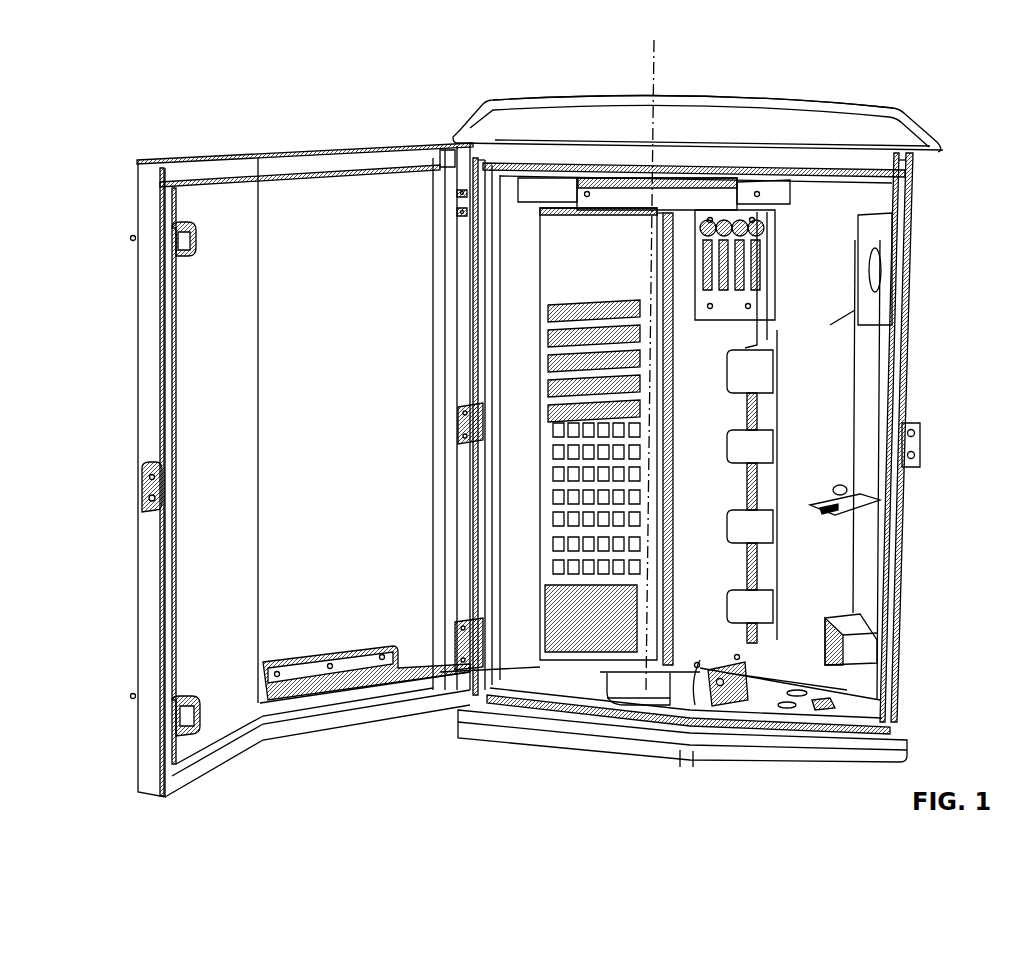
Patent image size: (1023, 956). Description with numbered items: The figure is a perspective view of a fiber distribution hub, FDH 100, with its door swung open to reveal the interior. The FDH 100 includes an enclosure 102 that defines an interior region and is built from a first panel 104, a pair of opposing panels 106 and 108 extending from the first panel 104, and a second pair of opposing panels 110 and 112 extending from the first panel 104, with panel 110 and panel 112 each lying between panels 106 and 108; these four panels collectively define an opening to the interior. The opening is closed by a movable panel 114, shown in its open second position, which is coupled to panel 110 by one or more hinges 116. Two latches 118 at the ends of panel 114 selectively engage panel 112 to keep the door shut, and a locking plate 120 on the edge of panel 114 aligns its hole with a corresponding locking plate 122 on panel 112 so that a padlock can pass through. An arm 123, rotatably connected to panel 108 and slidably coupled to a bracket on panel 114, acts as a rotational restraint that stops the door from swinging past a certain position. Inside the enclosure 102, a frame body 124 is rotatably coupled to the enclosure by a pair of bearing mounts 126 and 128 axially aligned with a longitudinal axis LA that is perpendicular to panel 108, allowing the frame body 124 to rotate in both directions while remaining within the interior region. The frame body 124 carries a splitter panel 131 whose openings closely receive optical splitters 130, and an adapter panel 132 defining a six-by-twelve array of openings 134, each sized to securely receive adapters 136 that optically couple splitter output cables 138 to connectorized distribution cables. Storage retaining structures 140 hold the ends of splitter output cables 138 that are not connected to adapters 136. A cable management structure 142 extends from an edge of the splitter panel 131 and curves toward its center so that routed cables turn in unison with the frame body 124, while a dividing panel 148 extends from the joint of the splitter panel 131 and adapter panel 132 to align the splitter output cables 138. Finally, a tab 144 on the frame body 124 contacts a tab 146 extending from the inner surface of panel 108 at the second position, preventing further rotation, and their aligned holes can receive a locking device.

The FDH 100 is at (202, 80).
The longitudinal axis LA is at (660, 48).
The enclosure 102 is at (823, 117).
The first panel 104 is at (908, 359).
The panel 106 is at (747, 102).
The panel 108 is at (790, 690).
The panel 110 is at (513, 247).
The panel 112 is at (897, 566).
The panel 114 is at (347, 213).
The hinges 116 is at (440, 438).
The latches 118 is at (177, 243).
The locking plate 120 is at (145, 490).
The locking plate 122 is at (920, 447).
The arm 123 is at (457, 695).
The frame body 124 is at (557, 243).
The bearing mount 126 is at (640, 203).
The bearing mount 128 is at (614, 665).
The optical splitters 130 is at (783, 277).
The splitter panel 131 is at (703, 637).
The adapter panel 132 is at (597, 467).
The openings 134 is at (567, 518).
The adapters 136 is at (517, 330).
The splitter output cables 138 is at (627, 377).
The storage retaining structures 140 is at (568, 655).
The cable management structure 142 is at (768, 363).
The tab 144 is at (738, 700).
The tab 146 is at (708, 672).
The dividing panel 148 is at (673, 265).